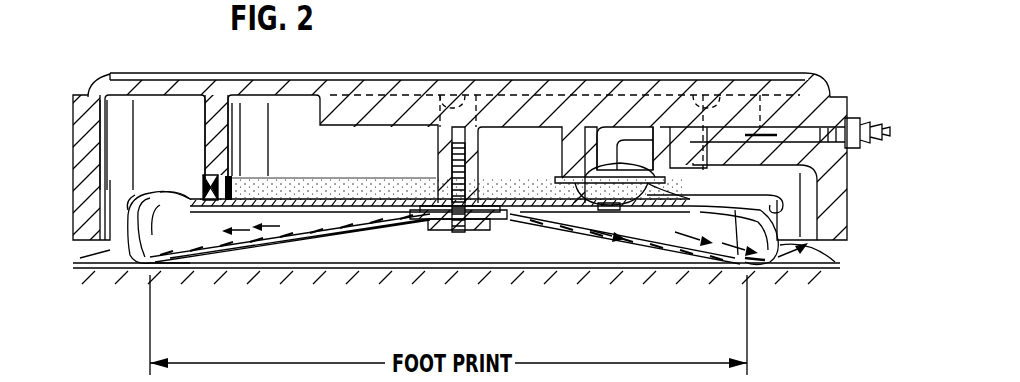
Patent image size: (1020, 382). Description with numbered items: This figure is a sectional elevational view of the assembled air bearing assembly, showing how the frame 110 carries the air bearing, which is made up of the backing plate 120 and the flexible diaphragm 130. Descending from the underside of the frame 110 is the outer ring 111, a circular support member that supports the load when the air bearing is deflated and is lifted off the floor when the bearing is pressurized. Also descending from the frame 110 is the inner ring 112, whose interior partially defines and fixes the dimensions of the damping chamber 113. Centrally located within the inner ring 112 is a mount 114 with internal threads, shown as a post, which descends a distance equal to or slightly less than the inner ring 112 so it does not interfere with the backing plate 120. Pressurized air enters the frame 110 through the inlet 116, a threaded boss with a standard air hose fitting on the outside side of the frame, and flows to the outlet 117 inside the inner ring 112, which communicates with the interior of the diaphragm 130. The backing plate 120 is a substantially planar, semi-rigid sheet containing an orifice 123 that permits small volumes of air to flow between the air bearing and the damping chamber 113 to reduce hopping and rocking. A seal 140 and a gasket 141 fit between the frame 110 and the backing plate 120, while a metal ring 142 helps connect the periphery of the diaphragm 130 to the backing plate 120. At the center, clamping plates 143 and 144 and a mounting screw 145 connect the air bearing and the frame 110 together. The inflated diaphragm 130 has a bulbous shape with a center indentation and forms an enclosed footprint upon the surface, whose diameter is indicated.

The frame 110 is at (660, 75).
The outer ring 111 is at (73, 128).
The inner ring 112 is at (208, 157).
The damping chamber 113 is at (331, 159).
The mount 114 is at (497, 203).
The inlet 116 is at (875, 130).
The outlet 117 is at (603, 203).
The backing plate 120 is at (257, 173).
The orifice 123 is at (327, 213).
The flexible diaphragm 130 is at (780, 245).
The seal 140 is at (637, 180).
The gasket 141 is at (203, 180).
The metal ring 142 is at (130, 252).
The center clamping plate 143 is at (413, 223).
The center clamping plate 144 is at (418, 223).
The mounting screw 145 is at (465, 212).